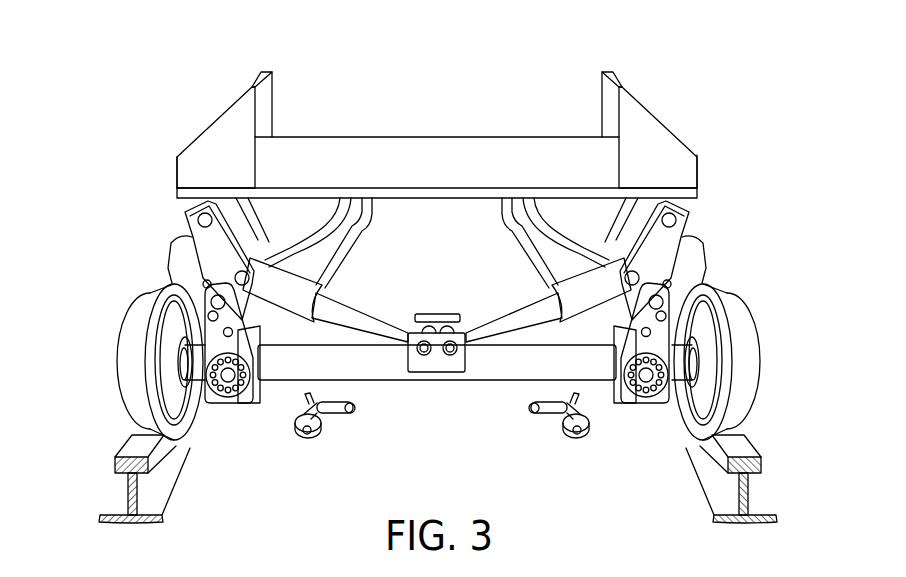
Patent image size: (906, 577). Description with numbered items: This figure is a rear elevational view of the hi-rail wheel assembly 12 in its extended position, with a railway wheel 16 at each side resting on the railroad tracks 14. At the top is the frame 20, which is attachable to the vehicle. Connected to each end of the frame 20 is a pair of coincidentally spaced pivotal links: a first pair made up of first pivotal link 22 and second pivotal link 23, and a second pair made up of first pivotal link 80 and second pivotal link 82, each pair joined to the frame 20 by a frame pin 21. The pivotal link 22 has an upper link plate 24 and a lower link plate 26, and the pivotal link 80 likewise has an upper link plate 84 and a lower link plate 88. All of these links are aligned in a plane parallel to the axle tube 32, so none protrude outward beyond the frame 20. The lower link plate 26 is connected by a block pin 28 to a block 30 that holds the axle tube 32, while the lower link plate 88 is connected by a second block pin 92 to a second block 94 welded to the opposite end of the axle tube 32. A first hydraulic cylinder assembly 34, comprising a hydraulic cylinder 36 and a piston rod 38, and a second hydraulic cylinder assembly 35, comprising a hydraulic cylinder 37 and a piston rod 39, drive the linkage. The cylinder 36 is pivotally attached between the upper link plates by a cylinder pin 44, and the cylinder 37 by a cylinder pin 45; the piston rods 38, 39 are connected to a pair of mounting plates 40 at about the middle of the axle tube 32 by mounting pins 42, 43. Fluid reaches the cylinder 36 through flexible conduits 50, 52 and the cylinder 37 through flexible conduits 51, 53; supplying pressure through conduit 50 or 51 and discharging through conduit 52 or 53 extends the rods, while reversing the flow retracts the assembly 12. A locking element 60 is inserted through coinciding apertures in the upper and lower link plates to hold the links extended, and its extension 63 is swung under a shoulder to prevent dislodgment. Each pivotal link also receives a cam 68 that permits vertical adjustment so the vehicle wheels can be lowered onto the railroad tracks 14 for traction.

The hi-rail wheel assembly 12 is at (66, 218).
The railroad tracks 14 is at (127, 445).
The railway wheel 16 is at (132, 366).
The frame 20 is at (400, 170).
The frame pin 21 is at (184, 212).
The first pivotal link 22 is at (178, 227).
The second pivotal link 23 is at (264, 224).
The upper link plate 24 is at (173, 258).
The lower link plate 26 is at (213, 332).
The block pin 28 is at (228, 404).
The block 30 is at (249, 404).
The axle tube 32 is at (485, 381).
The first hydraulic cylinder assembly 34 is at (361, 327).
The second hydraulic cylinder assembly 35 is at (498, 381).
The hydraulic cylinder 36 is at (318, 283).
The hydraulic cylinder 37 is at (556, 283).
The piston rod 38 is at (388, 322).
The piston rod 39 is at (486, 322).
The mounting plates 40 is at (437, 373).
The mounting pin 42 is at (423, 357).
The mounting pin 43 is at (450, 357).
The cylinder pin 44 is at (268, 290).
The cylinder pin 45 is at (606, 290).
The flexible conduit 50 is at (325, 230).
The flexible conduit 51 is at (512, 198).
The flexible conduit 52 is at (363, 198).
The flexible conduit 53 is at (549, 230).
The locking element 60 is at (308, 448).
The extension 63 is at (338, 412).
The cam 68 is at (222, 398).
The first pivotal link 80 is at (694, 228).
The second pivotal link 82 is at (618, 232).
The upper link plate 84 is at (667, 258).
The lower link plate 88 is at (675, 315).
The second block pin 92 is at (645, 404).
The second block 94 is at (626, 404).